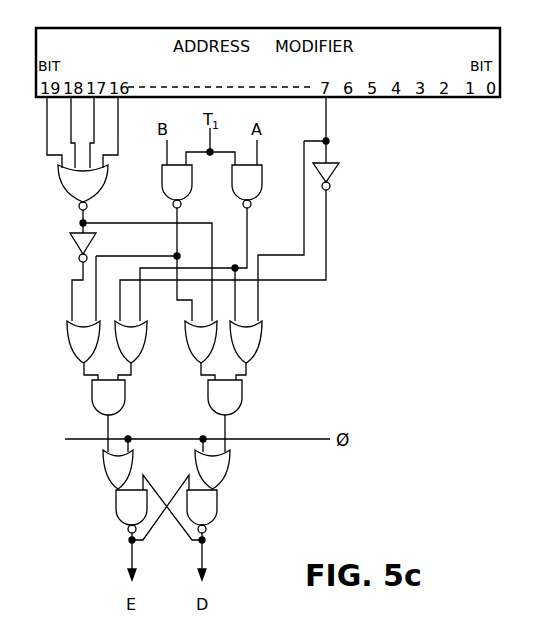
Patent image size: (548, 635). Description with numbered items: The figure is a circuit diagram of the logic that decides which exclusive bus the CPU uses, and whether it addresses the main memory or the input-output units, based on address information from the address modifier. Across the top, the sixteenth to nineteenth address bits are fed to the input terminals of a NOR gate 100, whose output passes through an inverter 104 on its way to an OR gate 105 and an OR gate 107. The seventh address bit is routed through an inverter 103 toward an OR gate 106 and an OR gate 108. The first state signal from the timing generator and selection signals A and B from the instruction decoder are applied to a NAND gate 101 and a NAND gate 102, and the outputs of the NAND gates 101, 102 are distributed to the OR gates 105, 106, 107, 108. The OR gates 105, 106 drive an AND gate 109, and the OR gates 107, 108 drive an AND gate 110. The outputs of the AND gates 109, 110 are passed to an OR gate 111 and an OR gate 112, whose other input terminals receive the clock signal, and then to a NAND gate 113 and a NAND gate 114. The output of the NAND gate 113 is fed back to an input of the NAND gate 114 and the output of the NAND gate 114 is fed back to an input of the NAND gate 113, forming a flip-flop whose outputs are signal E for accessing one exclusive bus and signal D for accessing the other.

The NOR gate 100 is at (104, 190).
The NAND gate 101 is at (190, 182).
The NAND gate 102 is at (260, 182).
The inverter 103 is at (335, 178).
The inverter 104 is at (70, 241).
The OR gate 105 is at (72, 352).
The OR gate 106 is at (143, 357).
The OR gate 107 is at (186, 338).
The OR gate 108 is at (260, 353).
The AND gate 109 is at (123, 407).
The AND gate 110 is at (240, 407).
The OR gate 111 is at (104, 470).
The OR gate 112 is at (228, 476).
The NAND gate 113 is at (116, 513).
The NAND gate 114 is at (217, 517).